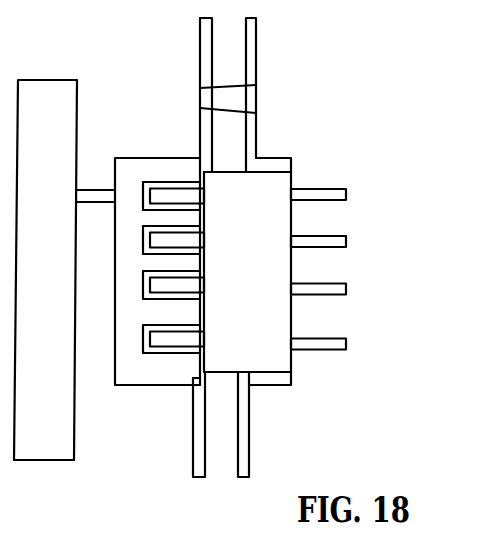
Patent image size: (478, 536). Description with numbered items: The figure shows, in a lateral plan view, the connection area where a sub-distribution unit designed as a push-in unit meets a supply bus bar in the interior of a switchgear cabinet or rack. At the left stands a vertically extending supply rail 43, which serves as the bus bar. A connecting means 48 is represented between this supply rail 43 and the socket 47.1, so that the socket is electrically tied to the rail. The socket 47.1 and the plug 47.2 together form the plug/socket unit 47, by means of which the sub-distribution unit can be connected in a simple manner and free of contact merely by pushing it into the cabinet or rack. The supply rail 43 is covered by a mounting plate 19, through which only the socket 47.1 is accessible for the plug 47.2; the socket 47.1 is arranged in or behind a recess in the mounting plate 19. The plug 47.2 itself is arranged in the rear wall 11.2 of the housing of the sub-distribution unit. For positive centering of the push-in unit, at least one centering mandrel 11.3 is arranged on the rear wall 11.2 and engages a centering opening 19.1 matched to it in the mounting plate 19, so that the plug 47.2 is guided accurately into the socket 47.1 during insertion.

The supply rail 43 is at (45, 76).
The connecting means 48 is at (103, 193).
The plug/socket unit 47 is at (180, 404).
The socket 47.1 is at (161, 366).
The plug 47.2 is at (280, 182).
The mounting plate 19 is at (216, 441).
The centering opening 19.1 is at (200, 88).
The rear wall 11.2 is at (258, 63).
The centering mandrel 11.3 is at (258, 103).